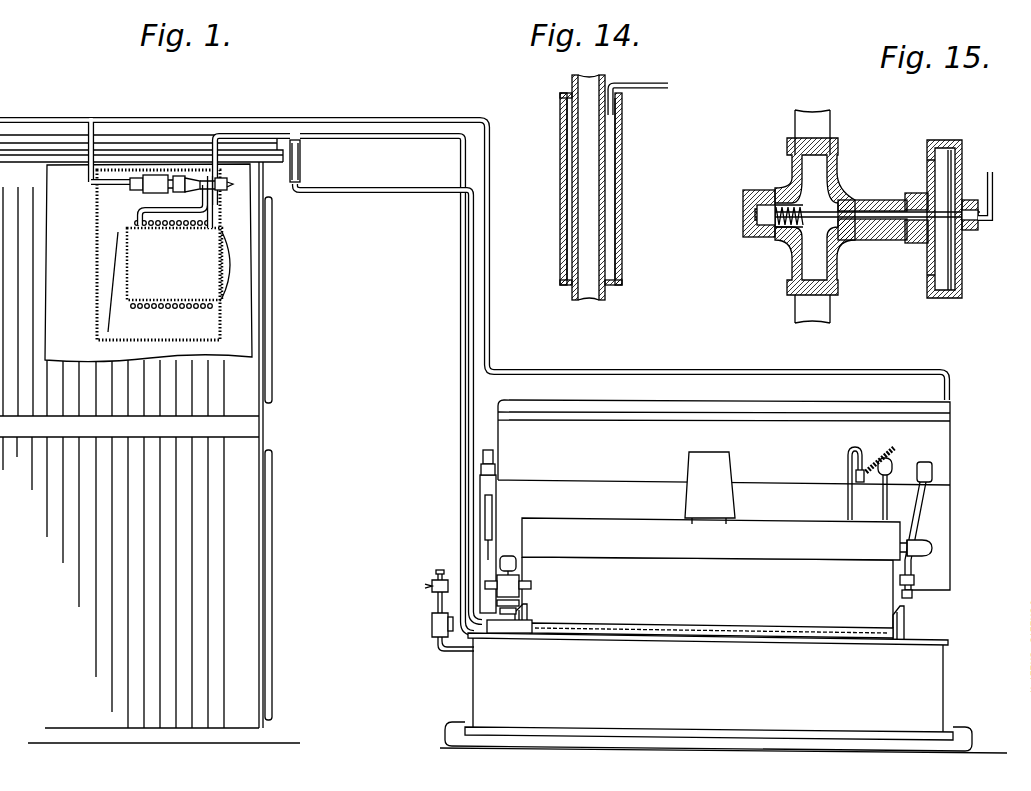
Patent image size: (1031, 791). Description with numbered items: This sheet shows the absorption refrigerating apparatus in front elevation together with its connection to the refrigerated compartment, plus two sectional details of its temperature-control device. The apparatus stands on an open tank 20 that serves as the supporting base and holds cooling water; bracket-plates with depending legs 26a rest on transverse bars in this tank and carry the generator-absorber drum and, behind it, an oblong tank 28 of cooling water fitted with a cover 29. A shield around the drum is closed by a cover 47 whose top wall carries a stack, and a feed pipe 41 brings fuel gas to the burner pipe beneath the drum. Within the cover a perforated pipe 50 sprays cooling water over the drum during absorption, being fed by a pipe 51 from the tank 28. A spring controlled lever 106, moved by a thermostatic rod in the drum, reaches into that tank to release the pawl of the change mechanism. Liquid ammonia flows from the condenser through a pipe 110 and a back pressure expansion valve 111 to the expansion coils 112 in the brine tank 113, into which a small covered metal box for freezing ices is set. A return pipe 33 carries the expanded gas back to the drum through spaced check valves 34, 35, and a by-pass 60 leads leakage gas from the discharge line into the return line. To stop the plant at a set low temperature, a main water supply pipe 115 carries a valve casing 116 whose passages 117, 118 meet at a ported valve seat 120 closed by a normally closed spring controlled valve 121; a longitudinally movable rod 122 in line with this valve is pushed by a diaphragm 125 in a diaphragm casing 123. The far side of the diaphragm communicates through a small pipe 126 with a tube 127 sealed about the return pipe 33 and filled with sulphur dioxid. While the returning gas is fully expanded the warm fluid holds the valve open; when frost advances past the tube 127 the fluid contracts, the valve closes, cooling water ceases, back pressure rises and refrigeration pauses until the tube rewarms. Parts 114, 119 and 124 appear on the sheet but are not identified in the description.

In FIG. 1, the open tank 20 is at (946, 684).
In FIG. 1, the depending legs 26a is at (912, 625).
In FIG. 1, the oblong tank 28 is at (942, 518).
In FIG. 1, the cover 29 is at (600, 403).
In FIG. 1, the return pipe 33 is at (470, 237).
In FIG. 14, the return pipe 33 is at (600, 183).
In FIG. 1, the check valve 34 is at (707, 592).
In FIG. 1, the check valve 35 is at (505, 580).
In FIG. 1, the feed pipe 41 is at (884, 505).
In FIG. 1, the cover 47 is at (768, 531).
In FIG. 1, the perforated pipe 50 is at (930, 549).
In FIG. 1, the pipe 51 is at (942, 556).
In FIG. 1, the by-pass 60 is at (480, 491).
In FIG. 1, the spring controlled lever 106 is at (918, 507).
In FIG. 1, the pipe 110 is at (700, 372).
In FIG. 1, the back pressure expansion valve 111 is at (162, 192).
In FIG. 1, the expansion coils 112 is at (163, 255).
In FIG. 1, the brine tank 113 is at (97, 250).
In FIG. 1, the burner pipe 114 is at (210, 228).
In FIG. 1, the main water supply pipe 115 is at (436, 583).
In FIG. 15, the main water supply pipe 115 is at (795, 308).
In FIG. 1, the valve casing 116 is at (436, 622).
In FIG. 15, the valve casing 116 is at (850, 203).
In FIG. 15, the passage 117 is at (818, 182).
In FIG. 1, the passage 118 is at (686, 515).
In FIG. 15, the passage 118 is at (800, 256).
In FIG. 15, the valve seat 119 is at (806, 198).
In FIG. 15, the ported valve seat 120 is at (808, 228).
In FIG. 15, the spring controlled valve 121 is at (755, 238).
In FIG. 15, the longitudinally movable rod 122 is at (892, 220).
In FIG. 15, the diaphragm casing 123 is at (960, 270).
In FIG. 15, the housing cover 124 is at (958, 170).
In FIG. 15, the diaphragm 125 is at (951, 222).
In FIG. 1, the small pipe 126 is at (463, 272).
In FIG. 14, the small pipe 126 is at (655, 90).
In FIG. 15, the small pipe 126 is at (968, 185).
In FIG. 1, the tube 127 is at (300, 164).
In FIG. 14, the tube 127 is at (622, 228).